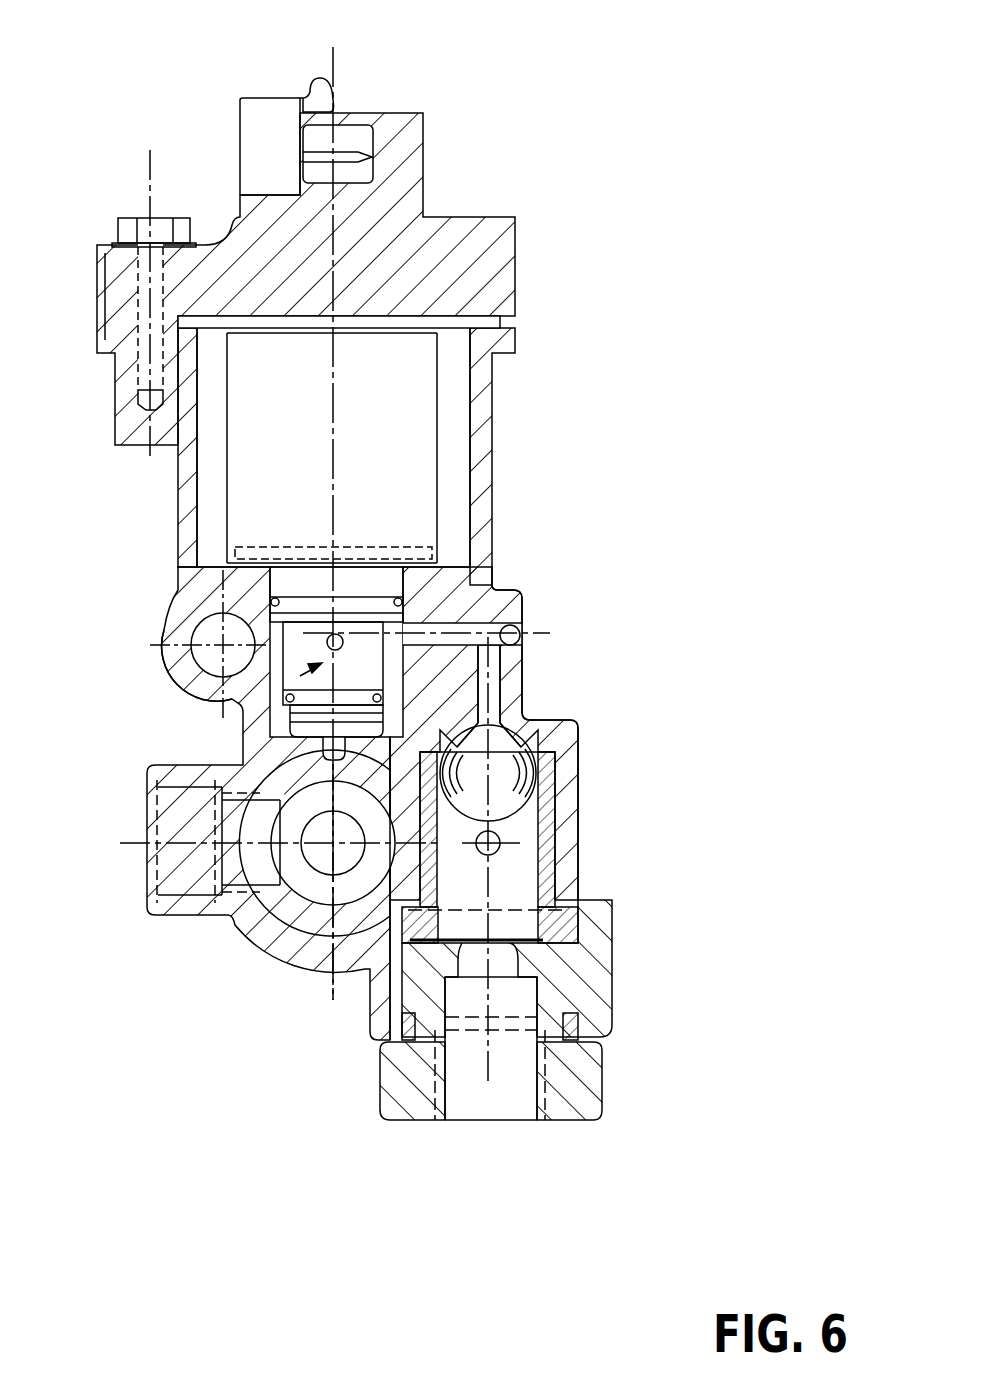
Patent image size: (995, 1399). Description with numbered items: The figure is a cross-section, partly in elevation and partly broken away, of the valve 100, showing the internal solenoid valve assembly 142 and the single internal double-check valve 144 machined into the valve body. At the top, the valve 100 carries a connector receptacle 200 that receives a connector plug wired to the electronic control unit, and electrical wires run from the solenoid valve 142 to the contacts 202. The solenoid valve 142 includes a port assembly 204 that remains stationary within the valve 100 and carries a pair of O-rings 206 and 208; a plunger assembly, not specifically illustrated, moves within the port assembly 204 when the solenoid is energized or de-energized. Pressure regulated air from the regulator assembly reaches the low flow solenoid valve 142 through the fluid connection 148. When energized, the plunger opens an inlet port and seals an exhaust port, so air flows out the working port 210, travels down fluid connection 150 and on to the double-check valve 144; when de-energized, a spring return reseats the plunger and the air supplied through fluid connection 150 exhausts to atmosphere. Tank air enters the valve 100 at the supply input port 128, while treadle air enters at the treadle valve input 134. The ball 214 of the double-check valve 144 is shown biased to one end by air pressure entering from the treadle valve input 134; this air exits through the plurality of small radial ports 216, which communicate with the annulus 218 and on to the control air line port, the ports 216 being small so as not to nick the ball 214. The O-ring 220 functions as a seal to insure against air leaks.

The valve 100 is at (638, 160).
The connector receptacle 200 is at (253, 128).
The contacts 202 is at (347, 153).
The solenoid valve assembly 142 is at (403, 447).
The fluid connection 150 is at (497, 595).
The O-ring 206 is at (270, 600).
The working port 210 is at (325, 640).
The port assembly 204 is at (292, 720).
The fluid connection 148 is at (328, 744).
The O-ring 208 is at (385, 698).
The ball 214 is at (522, 722).
The annulus 218 is at (557, 827).
The ports 216 is at (555, 853).
The O-ring 220 is at (623, 1003).
The double-check valve 144 is at (327, 957).
The supply input port 128 is at (178, 860).
The treadle valve input 134 is at (463, 1137).